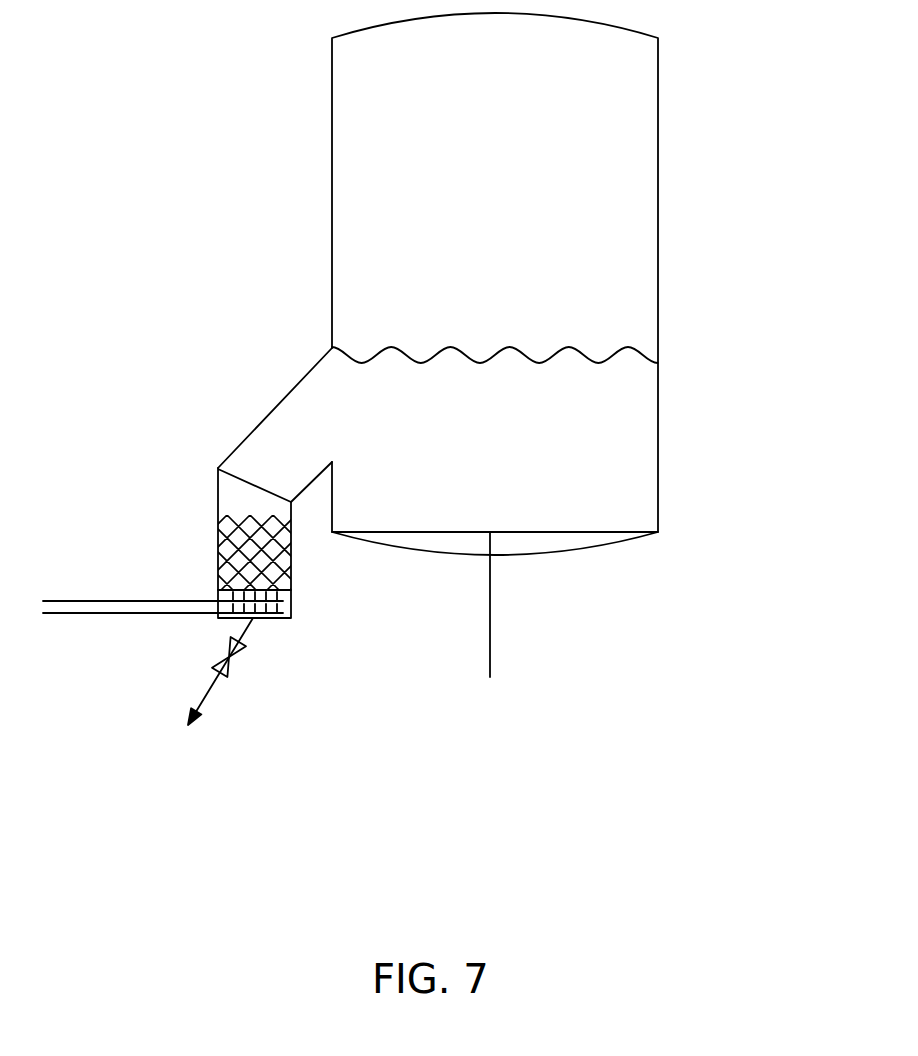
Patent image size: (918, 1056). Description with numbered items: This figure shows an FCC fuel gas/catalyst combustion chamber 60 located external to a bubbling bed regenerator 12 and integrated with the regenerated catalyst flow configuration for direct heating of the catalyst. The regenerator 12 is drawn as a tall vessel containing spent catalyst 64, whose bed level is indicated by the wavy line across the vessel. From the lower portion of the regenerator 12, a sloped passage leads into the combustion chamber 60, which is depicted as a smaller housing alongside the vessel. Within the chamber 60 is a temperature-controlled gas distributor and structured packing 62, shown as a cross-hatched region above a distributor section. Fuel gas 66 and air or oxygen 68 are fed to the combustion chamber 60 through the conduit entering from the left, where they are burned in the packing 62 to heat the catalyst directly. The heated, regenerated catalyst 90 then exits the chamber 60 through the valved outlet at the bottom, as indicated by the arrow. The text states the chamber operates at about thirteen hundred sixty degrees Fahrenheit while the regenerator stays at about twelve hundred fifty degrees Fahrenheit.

The regenerator 12 is at (658, 140).
The spent catalyst 64 is at (658, 363).
The FCC fuel gas/catalyst combustion chamber 60 is at (217, 494).
The gas distributor and structured packing 62 is at (230, 560).
The fuel gas 66 is at (137, 600).
The air or oxygen 68 is at (160, 614).
The regenerated catalyst 90 is at (210, 692).